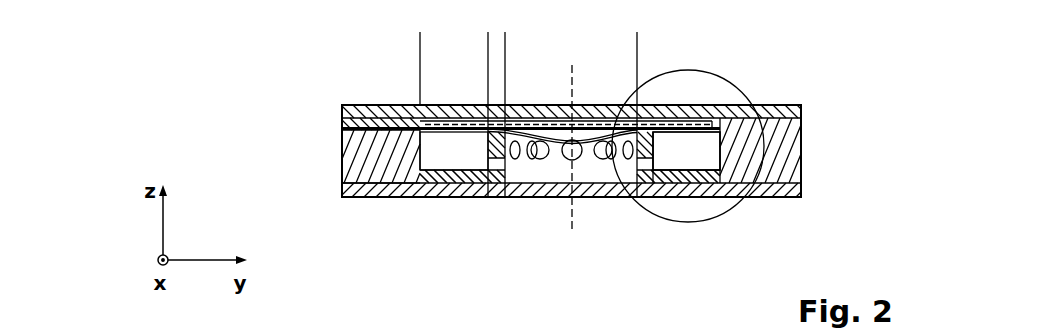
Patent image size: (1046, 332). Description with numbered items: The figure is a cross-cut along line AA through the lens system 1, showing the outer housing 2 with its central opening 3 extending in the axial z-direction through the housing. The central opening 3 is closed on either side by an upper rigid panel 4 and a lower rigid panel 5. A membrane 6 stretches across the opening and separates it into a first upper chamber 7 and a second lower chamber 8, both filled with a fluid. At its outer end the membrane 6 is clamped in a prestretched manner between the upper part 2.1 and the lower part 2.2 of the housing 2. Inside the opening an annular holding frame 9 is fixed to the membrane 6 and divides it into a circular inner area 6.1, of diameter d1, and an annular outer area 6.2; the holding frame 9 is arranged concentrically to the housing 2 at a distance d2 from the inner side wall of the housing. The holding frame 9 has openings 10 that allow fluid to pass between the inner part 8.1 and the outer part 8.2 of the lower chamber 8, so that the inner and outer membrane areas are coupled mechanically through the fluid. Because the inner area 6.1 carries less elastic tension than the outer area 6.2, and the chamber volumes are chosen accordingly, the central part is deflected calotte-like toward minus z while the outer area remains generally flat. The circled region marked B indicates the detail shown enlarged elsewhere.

The lens system 1 is at (328, 106).
The outer housing 2 is at (802, 132).
The upper part of the housing 2.1 is at (342, 130).
The lower part of the housing 2.2 is at (342, 183).
The central opening 3 is at (678, 116).
The upper rigid panel 4 is at (768, 107).
The lower rigid panel 5 is at (803, 193).
The membrane 6 is at (588, 160).
The inner area of the membrane 6.1 is at (535, 157).
The outer area of the membrane 6.2 is at (407, 140).
The upper chamber 7 is at (423, 116).
The lower chamber 8 is at (705, 148).
The inner part of the lower chamber 8.1 is at (623, 170).
The outer part of the lower chamber 8.2 is at (445, 150).
The annular holding frame 9 is at (733, 196).
The openings 10 is at (687, 195).
The detail B is at (723, 90).
The diameter of the inner area d1 is at (637, 44).
The distance d2 is at (488, 44).